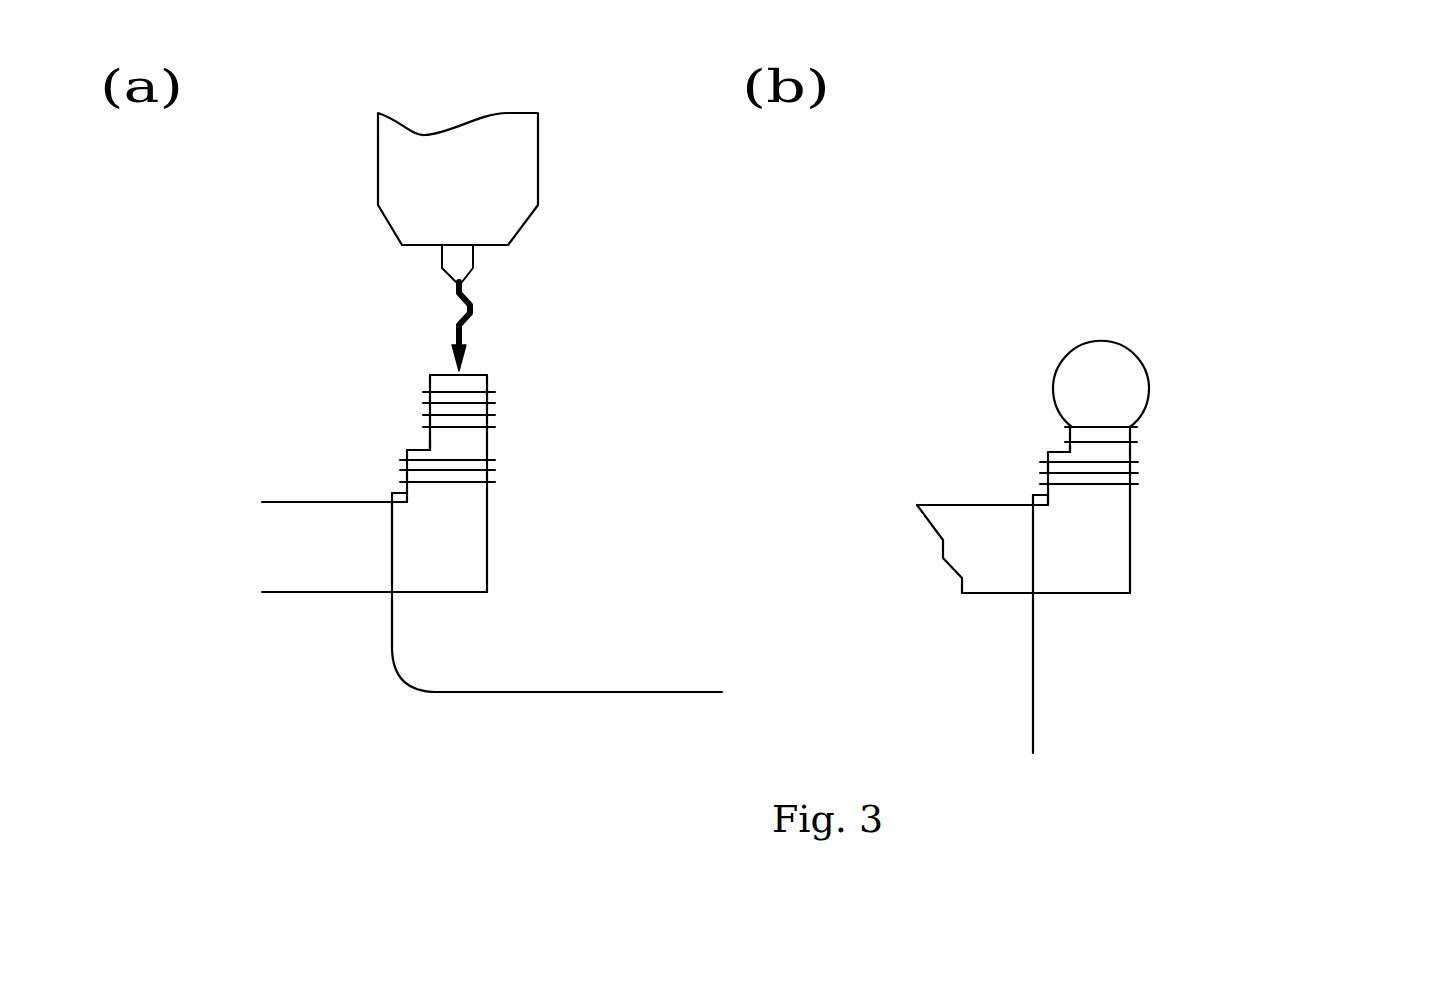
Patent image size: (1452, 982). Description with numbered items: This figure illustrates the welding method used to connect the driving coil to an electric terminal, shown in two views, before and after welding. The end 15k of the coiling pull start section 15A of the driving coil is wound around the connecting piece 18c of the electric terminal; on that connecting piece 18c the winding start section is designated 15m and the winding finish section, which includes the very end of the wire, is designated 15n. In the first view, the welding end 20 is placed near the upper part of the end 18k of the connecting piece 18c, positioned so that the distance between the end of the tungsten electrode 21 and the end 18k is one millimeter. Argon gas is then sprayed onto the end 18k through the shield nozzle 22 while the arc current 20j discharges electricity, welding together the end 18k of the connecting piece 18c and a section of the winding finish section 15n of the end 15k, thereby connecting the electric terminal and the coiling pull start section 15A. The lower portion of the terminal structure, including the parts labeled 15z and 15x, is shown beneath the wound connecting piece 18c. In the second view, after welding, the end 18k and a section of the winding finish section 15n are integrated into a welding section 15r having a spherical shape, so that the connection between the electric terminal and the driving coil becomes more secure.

The welding end 20 is at (490, 247).
The shield nozzle 22 is at (528, 188).
The tungsten electrode 21 is at (473, 262).
The arc current 20j is at (465, 330).
The end of the connecting piece 18k is at (424, 376).
The connecting piece 18c is at (440, 450).
The winding finish section 15n is at (500, 387).
The winding start section 15m is at (500, 452).
The end of the coiling pull start section 15k is at (906, 484).
The base step portion 15z is at (393, 556).
The bottom surface 15x is at (488, 692).
The coiling pull start section 15A is at (506, 571).
The welding section 15r is at (1093, 363).